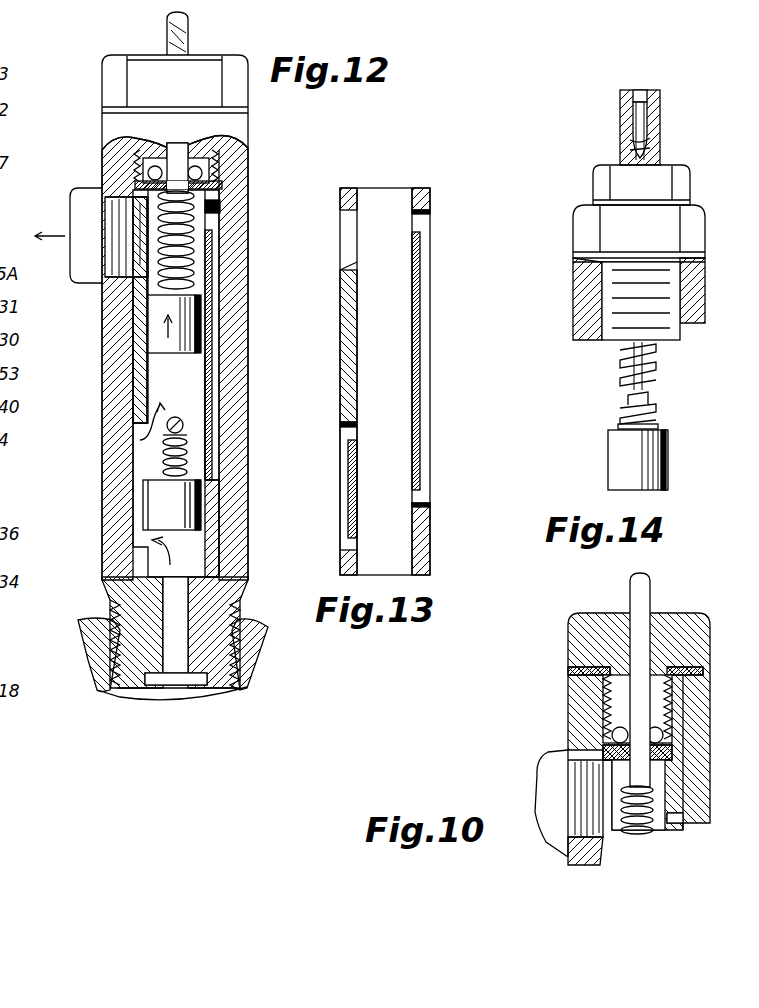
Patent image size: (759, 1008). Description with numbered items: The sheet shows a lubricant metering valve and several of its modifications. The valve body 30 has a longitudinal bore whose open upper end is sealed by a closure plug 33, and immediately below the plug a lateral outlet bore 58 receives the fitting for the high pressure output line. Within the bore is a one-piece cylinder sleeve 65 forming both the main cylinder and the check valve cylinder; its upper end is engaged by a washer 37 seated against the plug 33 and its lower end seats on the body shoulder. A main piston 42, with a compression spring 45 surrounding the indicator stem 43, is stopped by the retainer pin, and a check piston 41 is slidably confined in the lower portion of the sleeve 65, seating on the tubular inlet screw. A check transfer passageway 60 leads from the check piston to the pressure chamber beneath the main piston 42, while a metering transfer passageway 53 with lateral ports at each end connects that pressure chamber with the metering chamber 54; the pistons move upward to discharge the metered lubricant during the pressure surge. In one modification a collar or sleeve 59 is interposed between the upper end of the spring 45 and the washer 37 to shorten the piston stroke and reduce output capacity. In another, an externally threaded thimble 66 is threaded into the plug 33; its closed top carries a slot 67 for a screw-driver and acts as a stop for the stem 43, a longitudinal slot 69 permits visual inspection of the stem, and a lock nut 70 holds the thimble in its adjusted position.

In FIG. 12, the lateral outlet bore 58 is at (130, 193).
In FIG. 12, the metering chamber 54 is at (200, 200).
In FIG. 12, the main piston 42 is at (180, 320).
In FIG. 14, the main piston 42 is at (612, 442).
In FIG. 12, the one-piece cylinder sleeve 65 is at (143, 383).
In FIG. 13, the one-piece cylinder sleeve 65 is at (340, 378).
In FIG. 12, the check piston 41 is at (170, 520).
In FIG. 13, the metering transfer passageway 53 is at (425, 378).
In FIG. 13, the check transfer passageway 60 is at (340, 500).
In FIG. 14, the slot 67 is at (640, 88).
In FIG. 14, the externally threaded thimble 66 is at (633, 99).
In FIG. 14, the longitudinal slot 69 is at (646, 130).
In FIG. 10, the indicator stem 43 is at (630, 605).
In FIG. 14, the lock nut 70 is at (593, 190).
In FIG. 14, the valve body 30 is at (573, 305).
In FIG. 14, the closure plug 33 is at (603, 285).
In FIG. 10, the closure plug 33 is at (705, 658).
In FIG. 14, the compression spring 45 is at (620, 370).
In FIG. 10, the compression spring 45 is at (640, 830).
In FIG. 10, the washer 37 is at (602, 740).
In FIG. 10, the collar or sleeve 59 is at (605, 750).